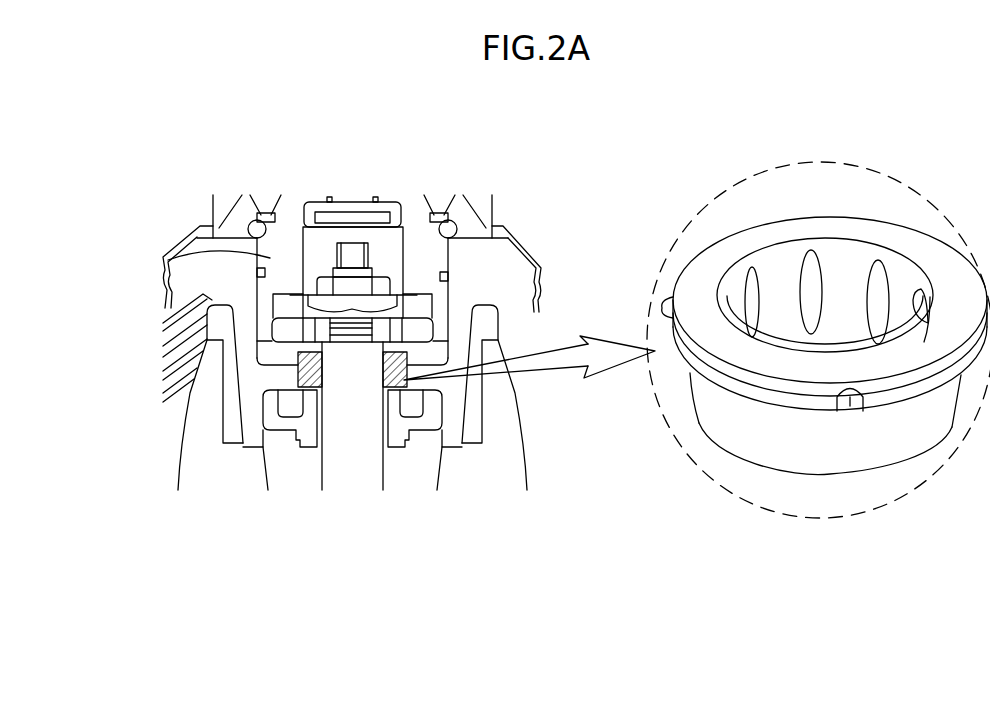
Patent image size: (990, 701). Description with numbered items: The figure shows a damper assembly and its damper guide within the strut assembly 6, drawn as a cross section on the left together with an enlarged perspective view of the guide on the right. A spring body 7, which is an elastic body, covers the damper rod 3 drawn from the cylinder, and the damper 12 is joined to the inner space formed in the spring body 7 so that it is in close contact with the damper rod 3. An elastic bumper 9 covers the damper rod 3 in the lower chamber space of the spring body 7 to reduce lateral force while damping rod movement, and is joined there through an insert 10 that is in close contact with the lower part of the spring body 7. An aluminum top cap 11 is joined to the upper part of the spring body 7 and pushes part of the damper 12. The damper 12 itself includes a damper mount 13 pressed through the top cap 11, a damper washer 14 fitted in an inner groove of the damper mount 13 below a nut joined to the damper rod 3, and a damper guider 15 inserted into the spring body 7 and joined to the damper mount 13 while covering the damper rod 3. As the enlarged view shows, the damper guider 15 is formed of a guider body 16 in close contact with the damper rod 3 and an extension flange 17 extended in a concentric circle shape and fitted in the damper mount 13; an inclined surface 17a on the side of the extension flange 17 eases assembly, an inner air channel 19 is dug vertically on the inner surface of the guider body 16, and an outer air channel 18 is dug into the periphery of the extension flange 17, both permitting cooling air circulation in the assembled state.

The damper rod 3 is at (363, 462).
The strut assembly 6 is at (100, 275).
The spring body 7 is at (165, 283).
The elastic bumper 9 is at (287, 467).
The insert 10 is at (262, 413).
The top cap 11 is at (165, 266).
The damper 12 is at (530, 152).
The damper mount 13 is at (424, 308).
The damper washer 14 is at (426, 333).
The damper guider 15 is at (402, 380).
The guider body 16 is at (712, 422).
The extension flange 17 is at (933, 260).
The inclined surface 17a is at (677, 340).
The outer air channel 18 is at (663, 307).
The inner air channel 19 is at (813, 287).